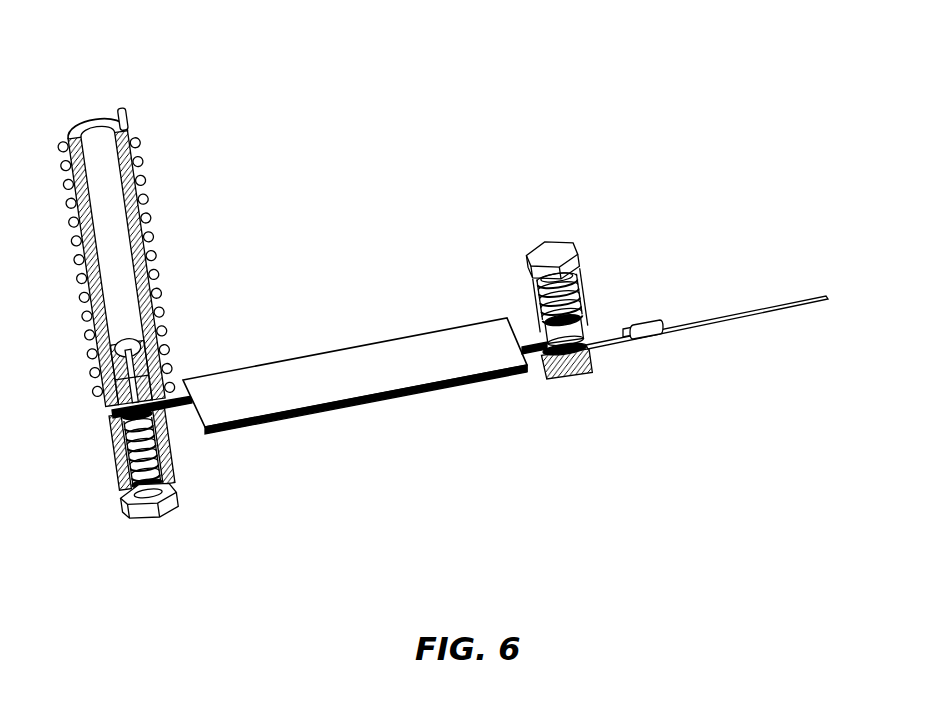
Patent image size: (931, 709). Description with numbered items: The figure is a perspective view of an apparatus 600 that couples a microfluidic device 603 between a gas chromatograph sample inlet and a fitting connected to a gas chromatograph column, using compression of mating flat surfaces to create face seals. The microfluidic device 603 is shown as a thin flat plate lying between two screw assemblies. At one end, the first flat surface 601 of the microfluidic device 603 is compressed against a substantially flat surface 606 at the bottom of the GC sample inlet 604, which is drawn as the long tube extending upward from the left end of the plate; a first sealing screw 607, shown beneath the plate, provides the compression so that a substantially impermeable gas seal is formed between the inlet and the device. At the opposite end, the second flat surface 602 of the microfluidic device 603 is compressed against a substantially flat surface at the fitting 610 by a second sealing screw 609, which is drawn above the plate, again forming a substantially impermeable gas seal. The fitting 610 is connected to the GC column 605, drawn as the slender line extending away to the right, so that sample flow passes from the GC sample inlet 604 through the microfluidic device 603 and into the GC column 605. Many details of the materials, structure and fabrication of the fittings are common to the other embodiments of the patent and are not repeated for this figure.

The apparatus 600 is at (450, 52).
The first flat surface 601 is at (128, 425).
The second flat surface 602 is at (592, 350).
The microfluidic device 603 is at (345, 360).
The GC sample inlet 604 is at (100, 120).
The GC column 605 is at (708, 306).
The substantially flat surface 606 is at (120, 418).
The first sealing screw 607 is at (148, 526).
The second sealing screw 609 is at (557, 240).
The fitting 610 is at (590, 336).